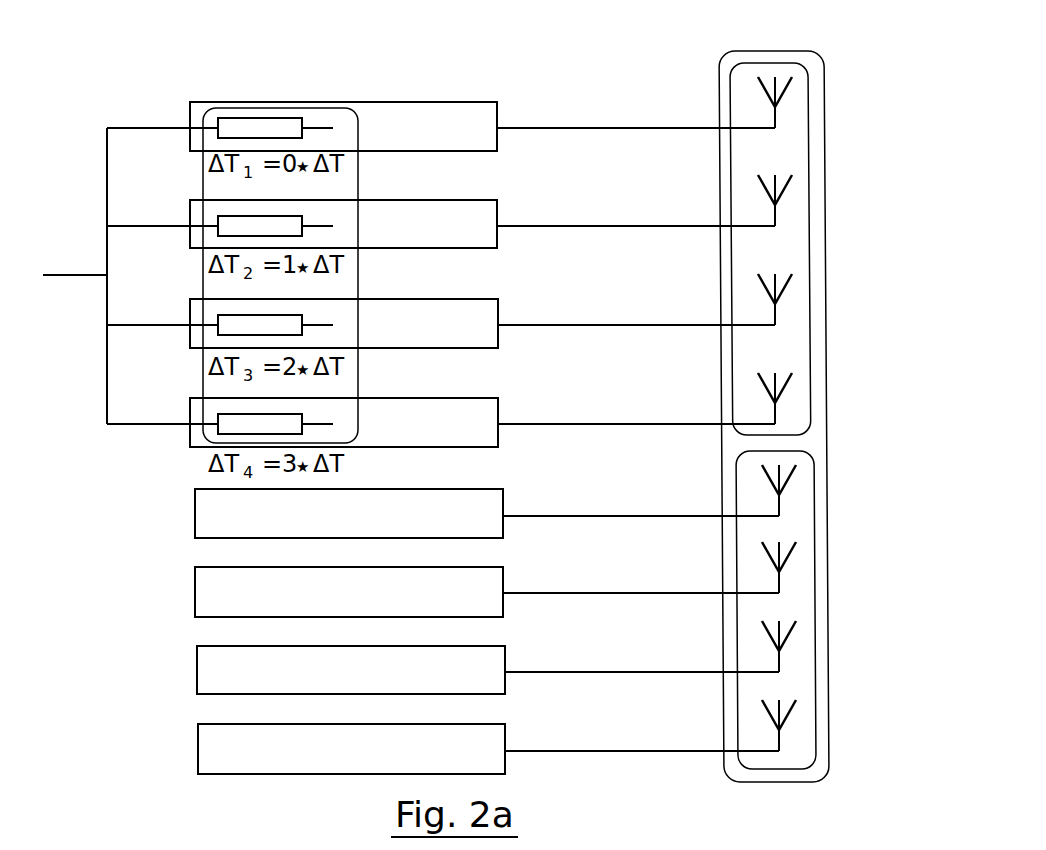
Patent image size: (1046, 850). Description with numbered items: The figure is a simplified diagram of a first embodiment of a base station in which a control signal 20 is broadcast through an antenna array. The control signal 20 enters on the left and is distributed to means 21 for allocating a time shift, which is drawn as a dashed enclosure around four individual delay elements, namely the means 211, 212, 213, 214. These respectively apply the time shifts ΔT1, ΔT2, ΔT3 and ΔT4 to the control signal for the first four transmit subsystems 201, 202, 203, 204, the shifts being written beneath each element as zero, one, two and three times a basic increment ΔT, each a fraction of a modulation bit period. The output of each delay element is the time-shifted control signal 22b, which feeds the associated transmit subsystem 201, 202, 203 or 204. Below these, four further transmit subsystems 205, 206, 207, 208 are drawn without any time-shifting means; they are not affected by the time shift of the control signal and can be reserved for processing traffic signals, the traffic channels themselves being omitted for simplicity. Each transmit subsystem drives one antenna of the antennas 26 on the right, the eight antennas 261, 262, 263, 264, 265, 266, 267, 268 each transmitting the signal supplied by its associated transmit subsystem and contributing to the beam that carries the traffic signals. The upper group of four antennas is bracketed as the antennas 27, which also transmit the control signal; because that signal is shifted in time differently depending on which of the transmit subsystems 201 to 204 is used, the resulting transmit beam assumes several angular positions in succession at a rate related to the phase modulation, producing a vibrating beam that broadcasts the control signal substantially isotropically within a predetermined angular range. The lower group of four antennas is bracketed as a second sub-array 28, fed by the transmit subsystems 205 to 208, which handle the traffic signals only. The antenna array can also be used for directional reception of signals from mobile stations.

The control signal 20 is at (70, 275).
The means for allocating a time shift 21 is at (258, 105).
The means for allocating a time shift to the first transmit subsystem 211 is at (222, 125).
The means for allocating a time shift to the second transmit subsystem 212 is at (222, 223).
The means for allocating a time shift to the third transmit subsystem 213 is at (222, 322).
The means for allocating a time shift to the fourth transmit subsystem 214 is at (222, 421).
The time-shifted control signal 22b is at (313, 122).
The transmit subsystem 201 is at (445, 113).
The transmit subsystem 202 is at (445, 211).
The transmit subsystem 203 is at (445, 308).
The transmit subsystem 204 is at (445, 406).
The transmit subsystem 205 is at (452, 500).
The transmit subsystem 206 is at (452, 586).
The transmit subsystem 207 is at (460, 660).
The transmit subsystem 208 is at (453, 742).
The antennas 26 is at (823, 93).
The antennas transmitting the control signal 27 is at (805, 178).
The second antenna sub-array 28 is at (813, 545).
The antenna 261 is at (765, 108).
The antenna 262 is at (767, 204).
The antenna 263 is at (767, 304).
The antenna 264 is at (770, 403).
The antenna 265 is at (770, 497).
The antenna 266 is at (772, 578).
The antenna 267 is at (770, 652).
The antenna 268 is at (770, 733).